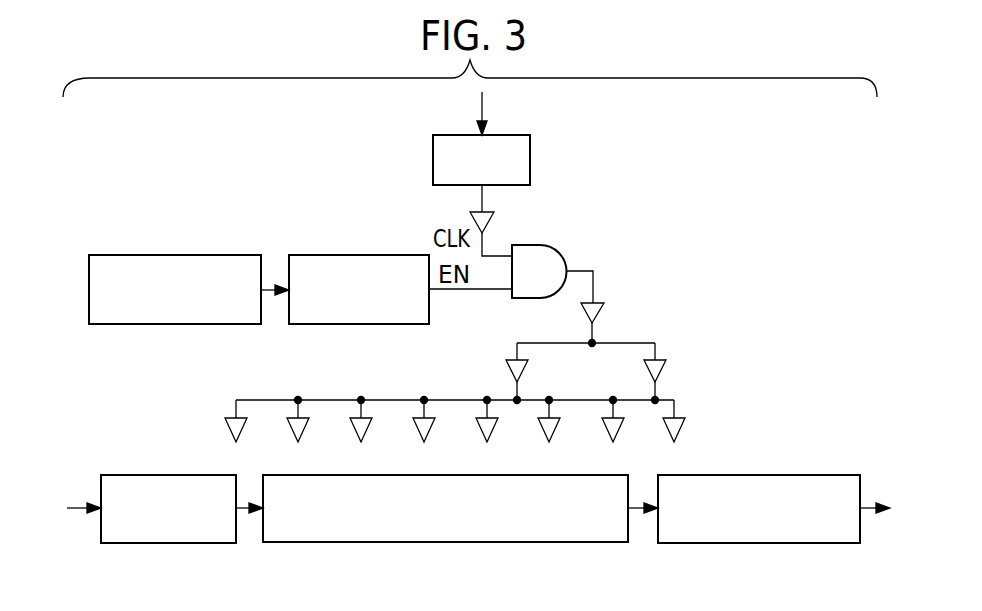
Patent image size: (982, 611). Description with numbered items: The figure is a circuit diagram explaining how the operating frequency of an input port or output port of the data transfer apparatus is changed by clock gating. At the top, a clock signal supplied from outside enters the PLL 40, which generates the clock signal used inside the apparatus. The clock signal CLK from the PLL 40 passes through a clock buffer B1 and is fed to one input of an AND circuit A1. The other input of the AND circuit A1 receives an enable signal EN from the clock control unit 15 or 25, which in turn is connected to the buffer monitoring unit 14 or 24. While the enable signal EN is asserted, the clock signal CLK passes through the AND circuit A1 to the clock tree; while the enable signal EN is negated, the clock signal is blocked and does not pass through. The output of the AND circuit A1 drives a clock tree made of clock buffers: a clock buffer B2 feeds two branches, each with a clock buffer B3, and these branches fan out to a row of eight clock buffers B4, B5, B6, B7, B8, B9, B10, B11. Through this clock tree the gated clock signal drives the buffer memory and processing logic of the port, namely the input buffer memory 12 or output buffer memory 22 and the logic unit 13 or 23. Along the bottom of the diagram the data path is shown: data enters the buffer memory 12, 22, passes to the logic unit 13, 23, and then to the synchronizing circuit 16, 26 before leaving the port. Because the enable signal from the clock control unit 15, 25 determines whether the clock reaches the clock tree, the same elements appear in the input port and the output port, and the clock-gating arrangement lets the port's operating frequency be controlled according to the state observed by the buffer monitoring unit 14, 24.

The PLL 40 is at (531, 153).
The clock buffer B1 is at (493, 224).
The AND circuit A1 is at (535, 245).
The clock buffer B2 is at (604, 313).
The clock buffer B3 is at (528, 370).
The clock buffer B4 is at (246, 425).
The clock buffer B5 is at (308, 425).
The clock buffer B6 is at (371, 425).
The clock buffer B7 is at (434, 425).
The clock buffer B8 is at (497, 425).
The clock buffer B9 is at (559, 425).
The clock buffer B10 is at (623, 425).
The clock buffer B11 is at (684, 425).
The input buffer memory 12 is at (168, 488).
The output buffer memory 22 is at (138, 475).
The logic unit 13 is at (445, 528).
The logic unit 23 is at (354, 543).
The buffer monitoring unit 14 is at (175, 268).
The buffer monitoring unit 24 is at (163, 255).
The clock control unit 15 is at (359, 268).
The clock control unit 25 is at (337, 255).
The synchronizing circuit 16 is at (759, 488).
The synchronizing circuit 26 is at (768, 475).